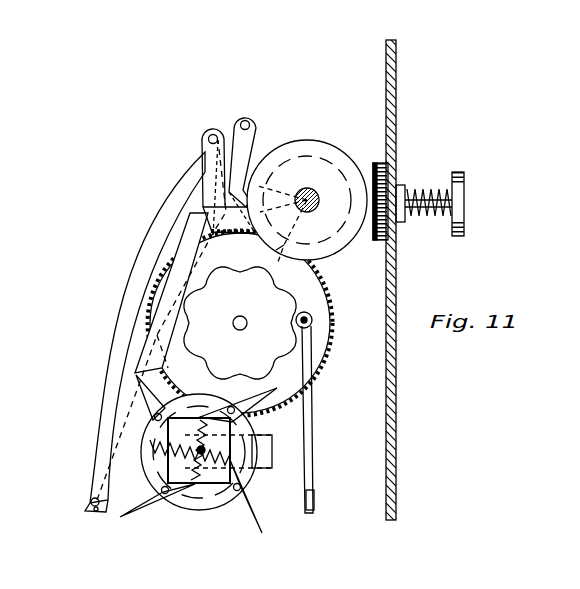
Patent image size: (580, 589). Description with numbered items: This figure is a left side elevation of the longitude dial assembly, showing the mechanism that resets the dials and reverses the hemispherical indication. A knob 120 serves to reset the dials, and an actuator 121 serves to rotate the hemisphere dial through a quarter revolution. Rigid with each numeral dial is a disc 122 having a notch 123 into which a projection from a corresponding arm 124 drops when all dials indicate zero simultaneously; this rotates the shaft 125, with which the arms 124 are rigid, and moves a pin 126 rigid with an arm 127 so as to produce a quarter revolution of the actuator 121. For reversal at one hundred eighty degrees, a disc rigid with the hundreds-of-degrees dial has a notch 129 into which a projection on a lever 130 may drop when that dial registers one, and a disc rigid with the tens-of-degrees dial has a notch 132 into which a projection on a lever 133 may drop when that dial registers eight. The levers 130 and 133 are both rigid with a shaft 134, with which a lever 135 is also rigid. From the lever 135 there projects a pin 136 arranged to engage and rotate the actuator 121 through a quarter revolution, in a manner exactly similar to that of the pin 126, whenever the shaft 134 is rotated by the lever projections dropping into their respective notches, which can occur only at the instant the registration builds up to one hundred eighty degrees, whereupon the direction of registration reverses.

The knob 120 is at (457, 173).
The actuator 121 is at (215, 510).
The disc 122 is at (308, 142).
The notch 123 is at (259, 212).
The arm 124 is at (252, 140).
The shaft 125 is at (250, 118).
The pin 126 is at (85, 512).
The arm 127 is at (147, 362).
The notch 129 is at (257, 186).
The lever 130 is at (212, 172).
The notch 132 is at (284, 245).
The lever 133 is at (205, 160).
The shaft 134 is at (209, 130).
The lever 135 is at (112, 367).
The pin 136 is at (97, 512).